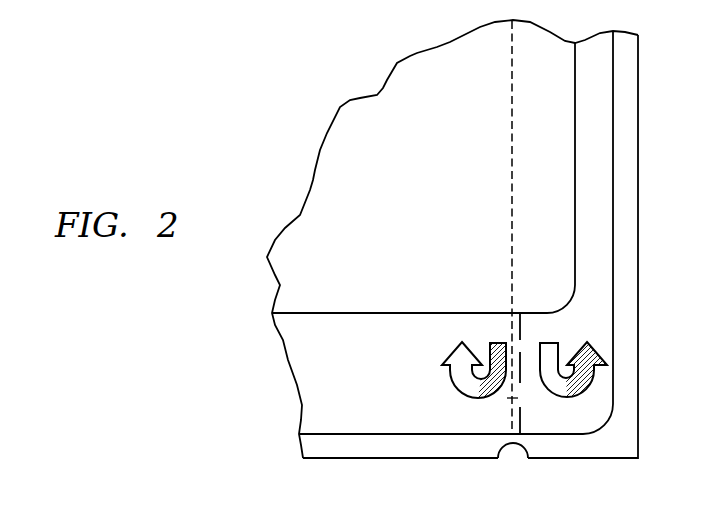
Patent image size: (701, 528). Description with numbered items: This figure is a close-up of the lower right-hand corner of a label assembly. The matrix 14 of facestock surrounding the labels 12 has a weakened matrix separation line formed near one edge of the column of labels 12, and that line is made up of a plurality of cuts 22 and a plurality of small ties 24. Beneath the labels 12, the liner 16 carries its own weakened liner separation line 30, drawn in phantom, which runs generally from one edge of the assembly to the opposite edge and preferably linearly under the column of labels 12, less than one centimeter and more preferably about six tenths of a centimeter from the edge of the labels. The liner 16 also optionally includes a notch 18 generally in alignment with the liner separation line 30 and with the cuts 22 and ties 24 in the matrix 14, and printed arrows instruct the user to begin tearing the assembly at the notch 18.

The labels 12 is at (437, 161).
The matrix 14 is at (373, 415).
The liner 16 is at (417, 447).
The notch 18 is at (507, 448).
The cuts 22 is at (522, 362).
The ties 24 is at (513, 398).
The liner separation line 30 is at (512, 286).